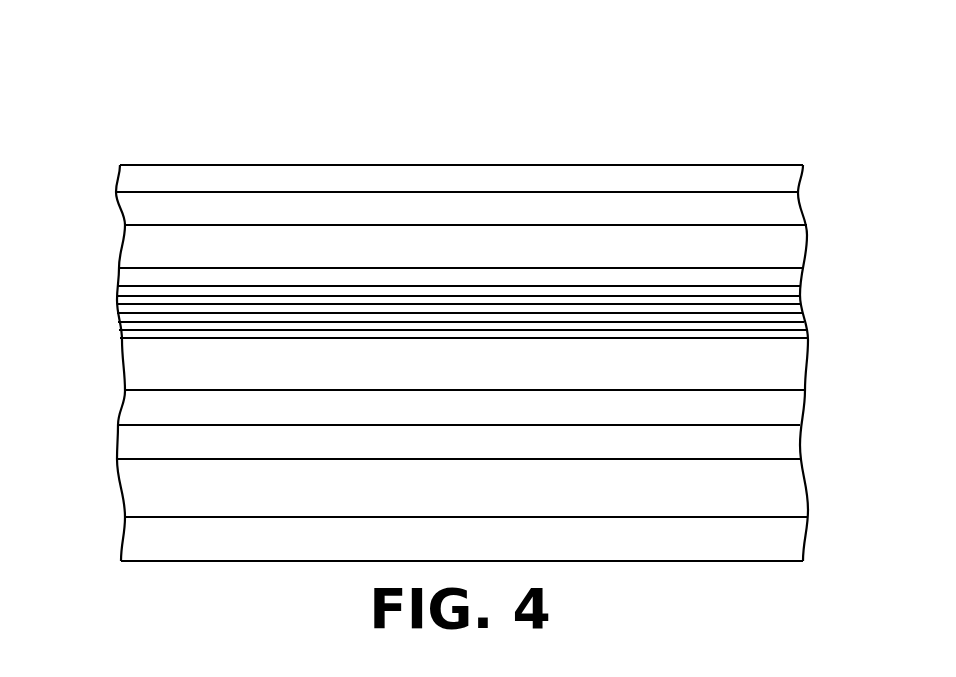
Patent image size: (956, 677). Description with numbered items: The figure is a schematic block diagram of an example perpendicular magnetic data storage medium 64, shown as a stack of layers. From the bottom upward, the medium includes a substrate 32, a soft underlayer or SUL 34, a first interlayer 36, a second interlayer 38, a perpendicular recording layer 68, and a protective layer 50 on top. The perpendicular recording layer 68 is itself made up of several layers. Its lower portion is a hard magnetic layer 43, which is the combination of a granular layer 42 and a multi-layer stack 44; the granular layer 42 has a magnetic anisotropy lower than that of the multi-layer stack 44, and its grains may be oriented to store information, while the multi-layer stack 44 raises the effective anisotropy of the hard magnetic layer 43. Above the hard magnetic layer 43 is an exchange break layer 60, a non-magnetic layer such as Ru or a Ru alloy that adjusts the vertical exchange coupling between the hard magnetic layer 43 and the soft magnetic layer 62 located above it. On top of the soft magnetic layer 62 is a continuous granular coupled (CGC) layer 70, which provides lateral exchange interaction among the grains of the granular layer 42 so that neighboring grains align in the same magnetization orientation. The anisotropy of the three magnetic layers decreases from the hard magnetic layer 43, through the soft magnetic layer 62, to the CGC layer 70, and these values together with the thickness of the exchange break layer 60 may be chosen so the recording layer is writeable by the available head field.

The magnetic data storage medium 64 is at (176, 117).
The protective layer 50 is at (466, 188).
The continuous granular coupled (CGC) layer 70 is at (466, 220).
The soft magnetic layer 62 is at (466, 256).
The exchange break layer 60 is at (128, 276).
The multi-layer stack 44 is at (113, 285).
The hard magnetic layer 43 is at (68, 285).
The granular layer 42 is at (466, 380).
The second interlayer 38 is at (466, 420).
The first interlayer 36 is at (466, 456).
The SUL 34 is at (466, 500).
The substrate 32 is at (466, 552).
The perpendicular recording layer 68 is at (812, 193).